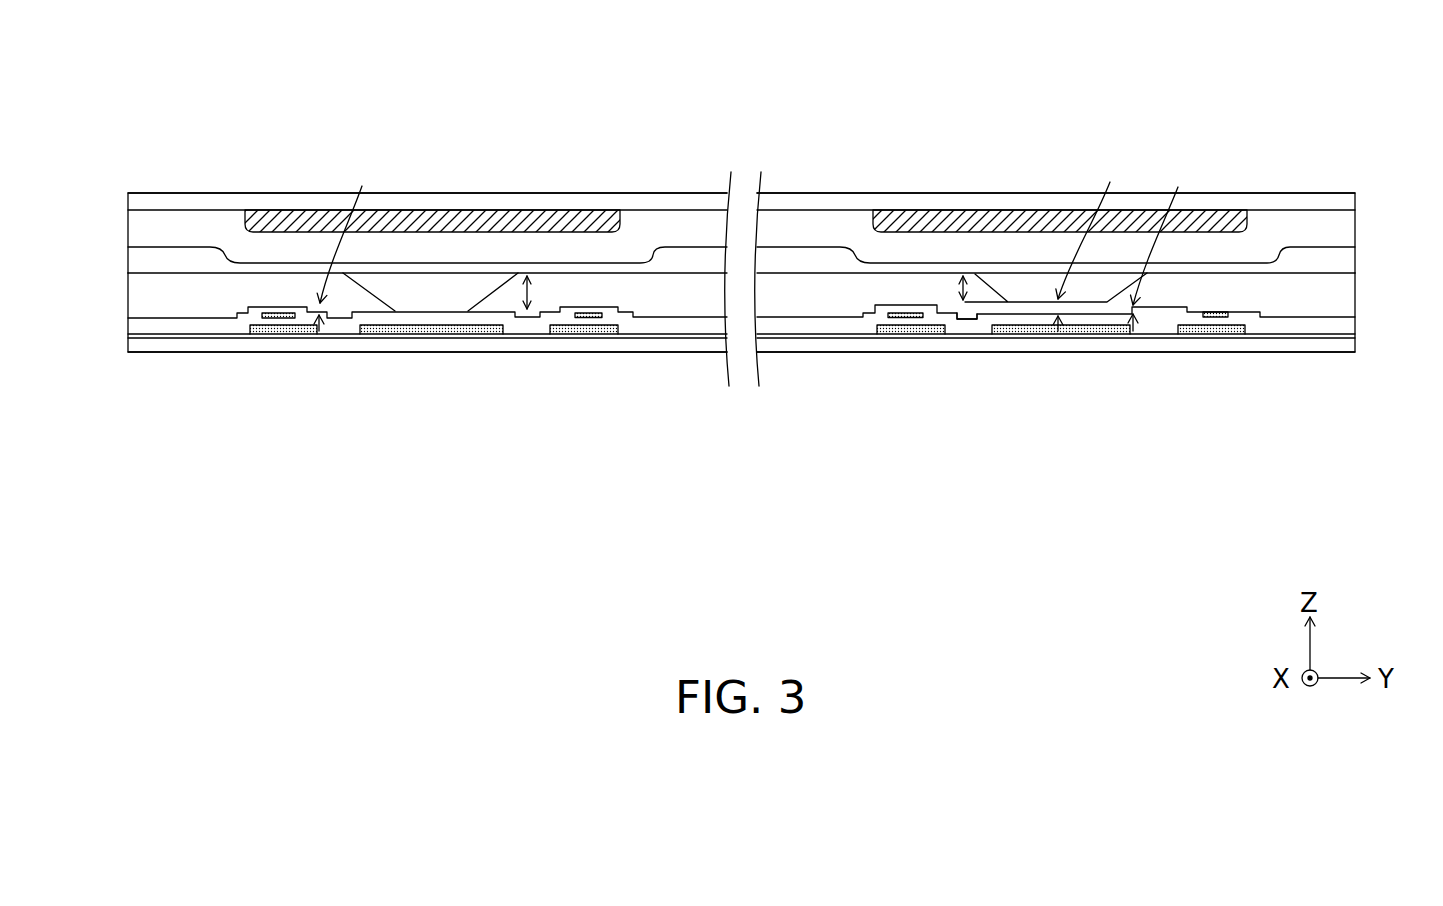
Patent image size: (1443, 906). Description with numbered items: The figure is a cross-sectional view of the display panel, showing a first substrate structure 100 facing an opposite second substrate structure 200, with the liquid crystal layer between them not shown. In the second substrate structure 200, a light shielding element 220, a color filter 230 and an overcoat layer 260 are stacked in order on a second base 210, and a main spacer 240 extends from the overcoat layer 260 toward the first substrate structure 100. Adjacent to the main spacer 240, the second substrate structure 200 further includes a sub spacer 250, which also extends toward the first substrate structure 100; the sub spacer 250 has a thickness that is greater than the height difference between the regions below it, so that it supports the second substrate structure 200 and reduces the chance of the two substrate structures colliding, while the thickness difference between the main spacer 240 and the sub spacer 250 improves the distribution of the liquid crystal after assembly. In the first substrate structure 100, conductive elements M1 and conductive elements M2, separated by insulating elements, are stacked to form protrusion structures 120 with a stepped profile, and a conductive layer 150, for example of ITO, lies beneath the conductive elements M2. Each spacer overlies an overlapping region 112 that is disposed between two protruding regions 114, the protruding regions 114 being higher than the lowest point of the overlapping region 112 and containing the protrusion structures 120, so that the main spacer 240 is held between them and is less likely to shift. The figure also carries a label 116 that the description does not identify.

The first substrate structure 100 is at (144, 367).
The overlapping region 112 is at (430, 364).
The protruding regions 114 is at (593, 364).
The protrusion 116 is at (967, 316).
The protrusion structure 120 is at (250, 307).
The conductive layer 150 is at (193, 338).
The second substrate structure 200 is at (128, 176).
The second base 210 is at (568, 204).
The light shielding element 220 is at (311, 212).
The color filter 230 is at (152, 229).
The main spacer 240 is at (422, 292).
The sub spacer 250 is at (1022, 290).
The overcoat layer 260 is at (152, 260).
The conductive elements M1 is at (282, 320).
The conductive elements M2 is at (292, 313).